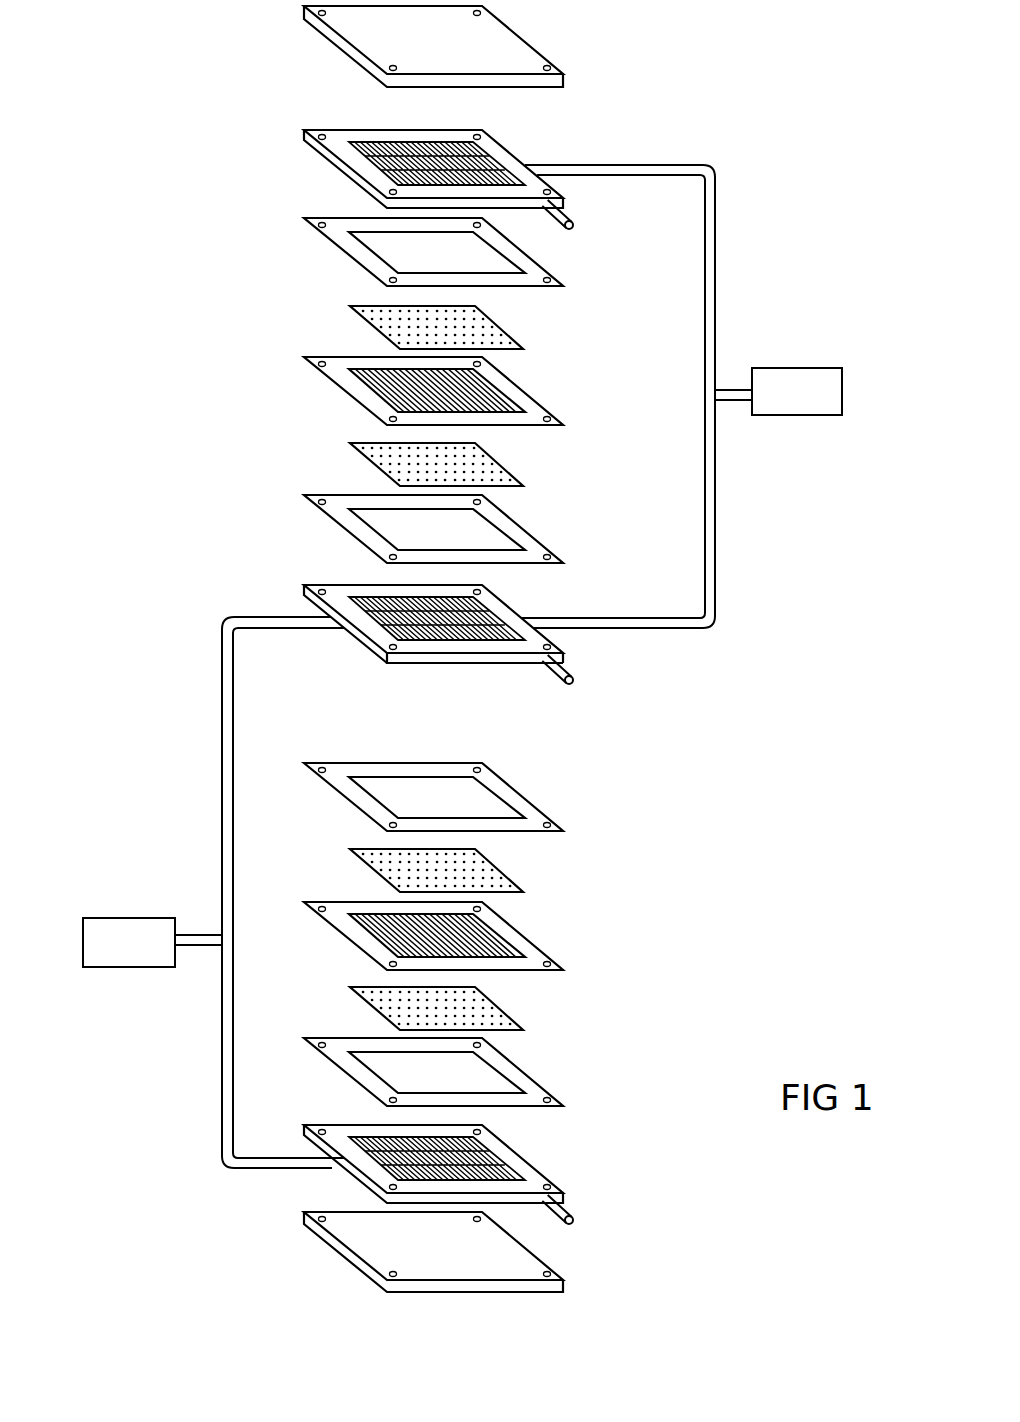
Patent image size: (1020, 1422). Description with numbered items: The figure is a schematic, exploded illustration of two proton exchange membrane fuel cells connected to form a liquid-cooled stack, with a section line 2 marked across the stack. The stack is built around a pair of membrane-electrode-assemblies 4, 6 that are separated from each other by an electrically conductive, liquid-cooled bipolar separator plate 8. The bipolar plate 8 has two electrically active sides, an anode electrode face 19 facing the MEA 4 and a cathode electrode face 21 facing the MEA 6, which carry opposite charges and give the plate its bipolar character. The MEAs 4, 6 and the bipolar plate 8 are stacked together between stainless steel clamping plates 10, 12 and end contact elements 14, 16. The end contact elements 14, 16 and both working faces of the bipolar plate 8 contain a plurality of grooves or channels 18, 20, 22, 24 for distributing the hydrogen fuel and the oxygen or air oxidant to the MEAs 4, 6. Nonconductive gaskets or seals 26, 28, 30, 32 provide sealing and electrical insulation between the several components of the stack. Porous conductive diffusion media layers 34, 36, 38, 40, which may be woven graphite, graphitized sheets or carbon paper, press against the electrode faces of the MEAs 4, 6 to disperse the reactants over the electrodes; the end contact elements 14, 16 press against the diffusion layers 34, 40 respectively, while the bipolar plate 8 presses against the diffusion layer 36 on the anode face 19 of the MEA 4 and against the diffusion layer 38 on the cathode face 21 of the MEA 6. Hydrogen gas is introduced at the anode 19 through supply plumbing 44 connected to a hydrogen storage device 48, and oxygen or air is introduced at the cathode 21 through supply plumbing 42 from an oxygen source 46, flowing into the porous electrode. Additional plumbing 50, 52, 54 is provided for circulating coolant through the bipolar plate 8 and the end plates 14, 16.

The section line 2- 2 is at (626, 737).
The membrane-electrode-assembly 4 is at (344, 398).
The membrane-electrode-assembly 6 is at (532, 933).
The bipolar separator plate 8 is at (295, 583).
The clamping plate 10 is at (340, 54).
The clamping plate 12 is at (542, 1257).
The end contact element 14 is at (297, 147).
The end contact element 16 is at (507, 1137).
The channels 18 is at (400, 173).
The anode electrode face 19 is at (493, 600).
The channels 20 is at (352, 600).
The cathode electrode face 21 is at (353, 647).
The channels 22 is at (525, 667).
The channels 24 is at (510, 1173).
The gasket 26 is at (362, 258).
The gasket 28 is at (339, 512).
The gasket 30 is at (562, 830).
The gasket 32 is at (523, 1075).
The diffusion media layer 34 is at (368, 318).
The diffusion media layer 36 is at (362, 453).
The diffusion media layer 38 is at (505, 875).
The diffusion media layer 40 is at (503, 1012).
The supply plumbing 42 is at (715, 513).
The supply plumbing 44 is at (222, 1048).
The oxygen source 46 is at (818, 368).
The storage device 48 is at (100, 918).
The plumbing 50 is at (575, 221).
The plumbing 52 is at (565, 664).
The plumbing 54 is at (575, 1212).